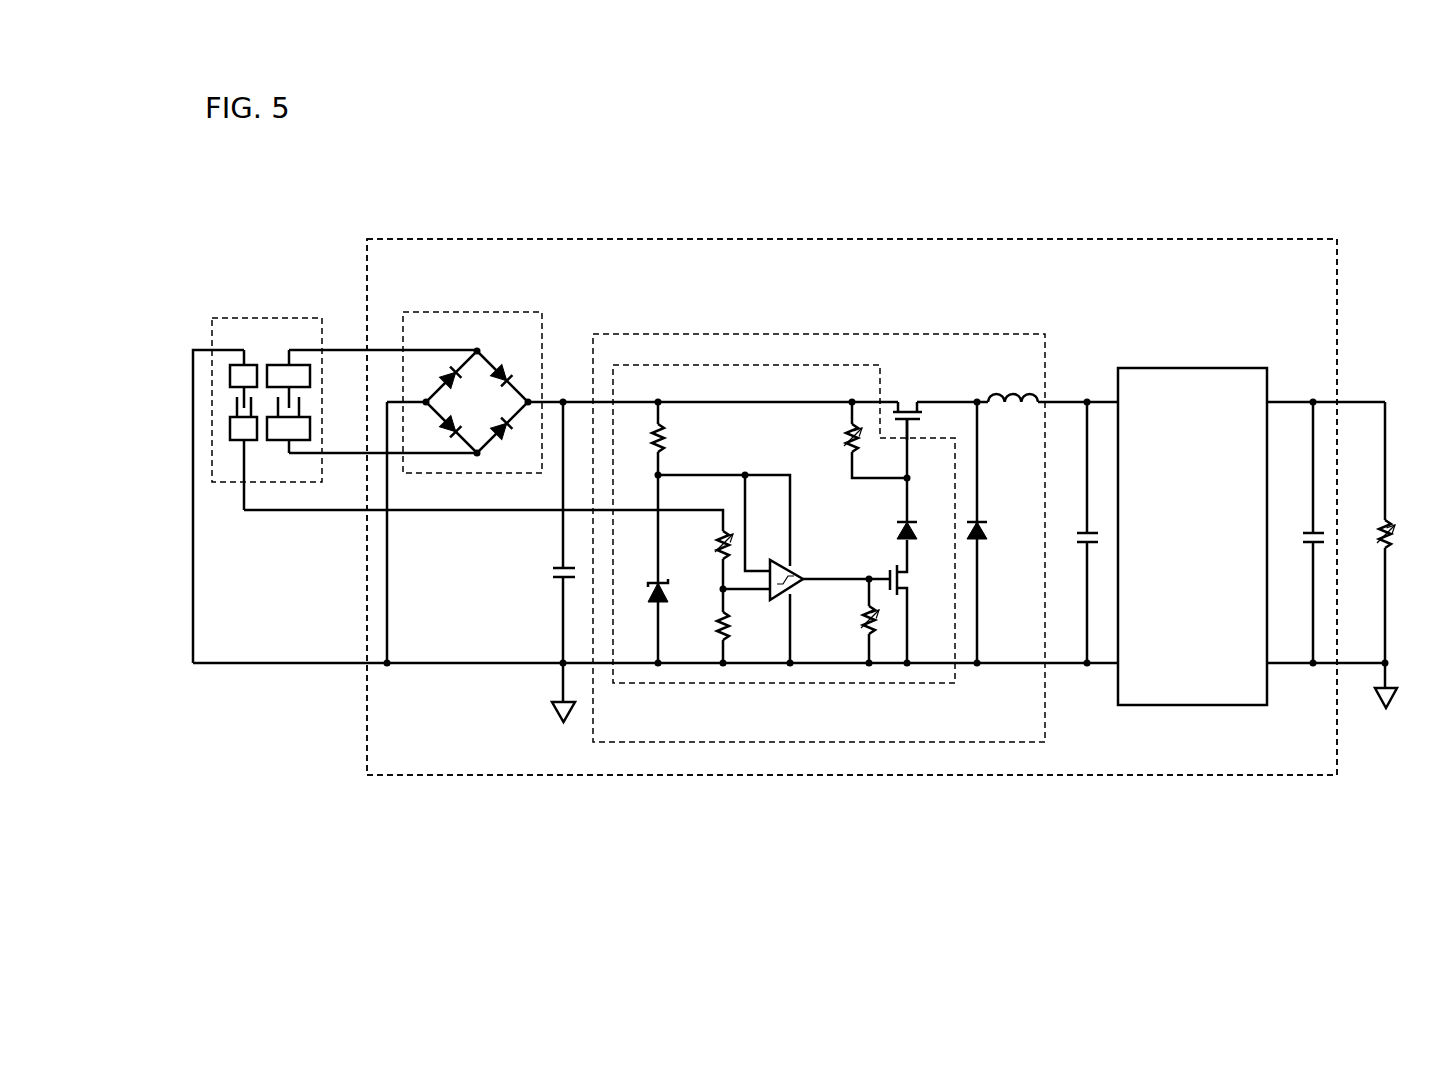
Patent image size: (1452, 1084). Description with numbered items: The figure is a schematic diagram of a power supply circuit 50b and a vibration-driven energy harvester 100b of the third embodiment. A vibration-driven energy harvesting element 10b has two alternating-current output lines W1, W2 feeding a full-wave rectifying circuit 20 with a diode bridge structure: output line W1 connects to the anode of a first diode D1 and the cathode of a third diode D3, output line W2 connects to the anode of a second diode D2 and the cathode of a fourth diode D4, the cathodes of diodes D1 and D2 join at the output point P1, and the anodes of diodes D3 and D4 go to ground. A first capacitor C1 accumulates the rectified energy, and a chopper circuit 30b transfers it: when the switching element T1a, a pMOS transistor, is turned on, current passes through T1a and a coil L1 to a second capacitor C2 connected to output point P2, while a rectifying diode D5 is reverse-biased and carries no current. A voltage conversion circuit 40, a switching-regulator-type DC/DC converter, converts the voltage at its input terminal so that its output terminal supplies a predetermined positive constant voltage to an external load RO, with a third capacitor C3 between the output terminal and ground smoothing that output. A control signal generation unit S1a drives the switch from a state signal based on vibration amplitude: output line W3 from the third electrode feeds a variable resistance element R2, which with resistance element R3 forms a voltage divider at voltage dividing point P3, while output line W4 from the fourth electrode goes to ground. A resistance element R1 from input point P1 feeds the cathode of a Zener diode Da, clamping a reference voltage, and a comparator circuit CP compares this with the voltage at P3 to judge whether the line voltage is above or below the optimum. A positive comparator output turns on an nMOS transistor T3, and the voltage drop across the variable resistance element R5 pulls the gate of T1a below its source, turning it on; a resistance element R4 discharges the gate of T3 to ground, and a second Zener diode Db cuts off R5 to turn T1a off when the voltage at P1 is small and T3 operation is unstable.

The vibration-driven energy harvester 100b is at (755, 203).
The power supply circuit 50b is at (918, 238).
The vibration-driven energy harvesting element 10b is at (285, 315).
The rectifying circuit 20 is at (464, 366).
The chopper circuit 30b is at (737, 332).
The voltage conversion circuit 40 is at (1163, 364).
The control signal generation unit S1a is at (782, 686).
The output line W1 is at (383, 442).
The output line W2 is at (383, 343).
The output line W3 is at (468, 514).
The output line W4 is at (208, 497).
The first diode D1 is at (508, 442).
The second diode D2 is at (513, 365).
The third diode D3 is at (434, 434).
The fourth diode D4 is at (434, 376).
The rectifying diode D5 is at (993, 533).
The Zener diode Da is at (645, 571).
The second Zener diode Db is at (891, 479).
The output point P1 is at (565, 390).
The output point P2 is at (1078, 389).
The voltage dividing point P3 is at (729, 590).
The first capacitor C1 is at (546, 562).
The second capacitor C2 is at (1074, 534).
The third capacitor C3 is at (1302, 533).
The resistance element R1 is at (644, 439).
The resistance element R2 is at (709, 559).
The resistance element R3 is at (707, 628).
The resistance element R4 is at (854, 621).
The resistance element R5 is at (862, 440).
The comparator circuit CP is at (793, 572).
The switching element T1a is at (907, 407).
The transistor T3 is at (917, 603).
The coil L1 is at (1013, 384).
The external load RO is at (1370, 555).